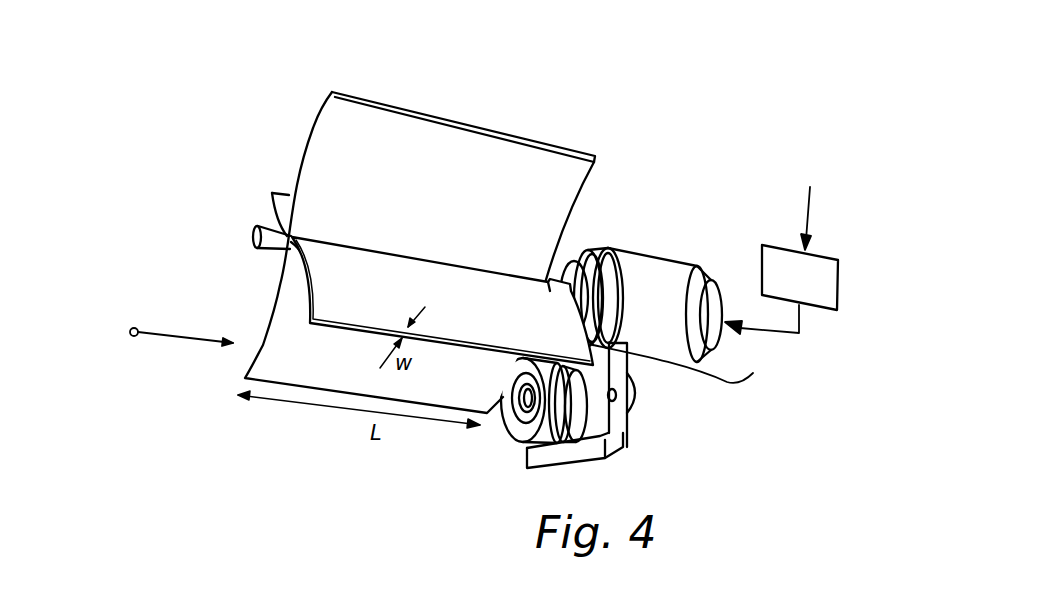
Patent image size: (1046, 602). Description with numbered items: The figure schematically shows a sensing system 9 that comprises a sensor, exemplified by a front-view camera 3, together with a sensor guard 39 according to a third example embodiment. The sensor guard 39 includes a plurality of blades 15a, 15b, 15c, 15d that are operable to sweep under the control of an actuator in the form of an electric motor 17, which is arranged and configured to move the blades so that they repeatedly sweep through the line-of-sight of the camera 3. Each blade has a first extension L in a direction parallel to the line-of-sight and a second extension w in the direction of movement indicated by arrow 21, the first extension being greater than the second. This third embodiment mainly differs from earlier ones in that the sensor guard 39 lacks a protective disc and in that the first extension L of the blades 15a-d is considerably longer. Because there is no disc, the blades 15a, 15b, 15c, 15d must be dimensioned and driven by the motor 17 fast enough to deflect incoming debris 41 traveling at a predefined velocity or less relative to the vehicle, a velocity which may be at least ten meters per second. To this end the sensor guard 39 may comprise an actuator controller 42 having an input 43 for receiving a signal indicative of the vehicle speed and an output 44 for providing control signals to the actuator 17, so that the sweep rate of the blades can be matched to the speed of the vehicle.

The front-view camera 3 is at (603, 455).
The sensing system 9 is at (498, 500).
The blade 15a is at (563, 178).
The blade 15b is at (285, 200).
The blade 15c is at (272, 363).
The blade 15d is at (670, 355).
The electric motor 17 is at (653, 273).
The arrow 21 is at (428, 295).
The sensor guard 39 is at (630, 96).
The incoming debris 41 is at (136, 325).
The actuator controller 42 is at (780, 247).
The input 43 is at (807, 250).
The output 44 is at (800, 310).